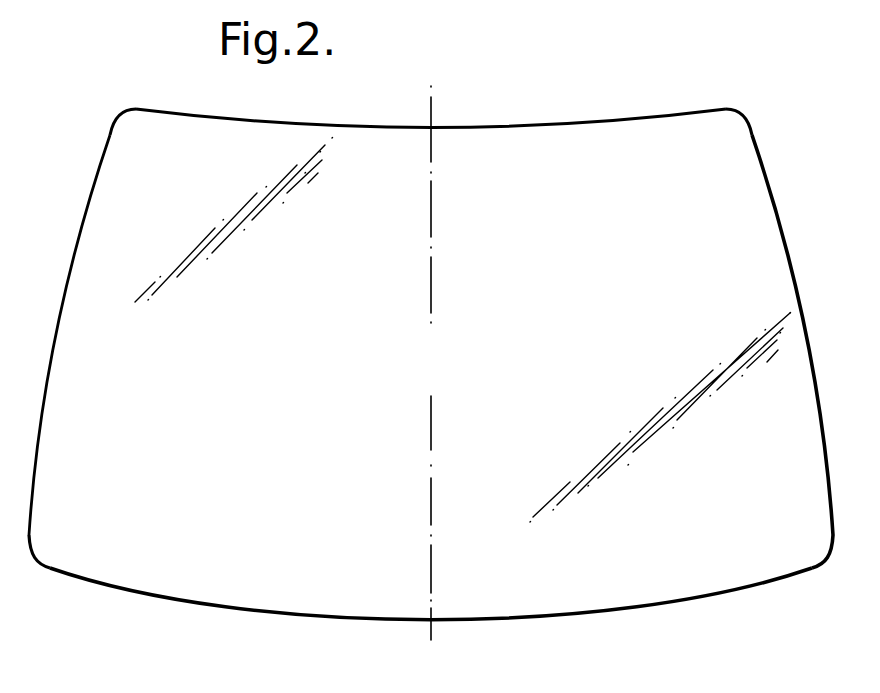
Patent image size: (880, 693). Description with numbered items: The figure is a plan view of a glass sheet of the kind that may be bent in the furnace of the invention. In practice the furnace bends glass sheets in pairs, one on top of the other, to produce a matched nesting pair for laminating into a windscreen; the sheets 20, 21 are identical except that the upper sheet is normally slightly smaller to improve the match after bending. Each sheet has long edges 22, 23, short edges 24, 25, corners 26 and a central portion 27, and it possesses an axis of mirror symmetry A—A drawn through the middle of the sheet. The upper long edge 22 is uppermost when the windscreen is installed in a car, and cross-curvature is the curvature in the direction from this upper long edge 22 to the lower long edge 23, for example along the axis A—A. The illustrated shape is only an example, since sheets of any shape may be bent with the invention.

The glass sheet 20 is at (463, 91).
The glass sheet 21 is at (463, 91).
The upper long edge 22 is at (497, 126).
The lower long edge 23 is at (525, 621).
The short edge 24 is at (61, 297).
The short edge 25 is at (799, 300).
The corners 26 is at (123, 114).
The central portion 27 is at (448, 371).